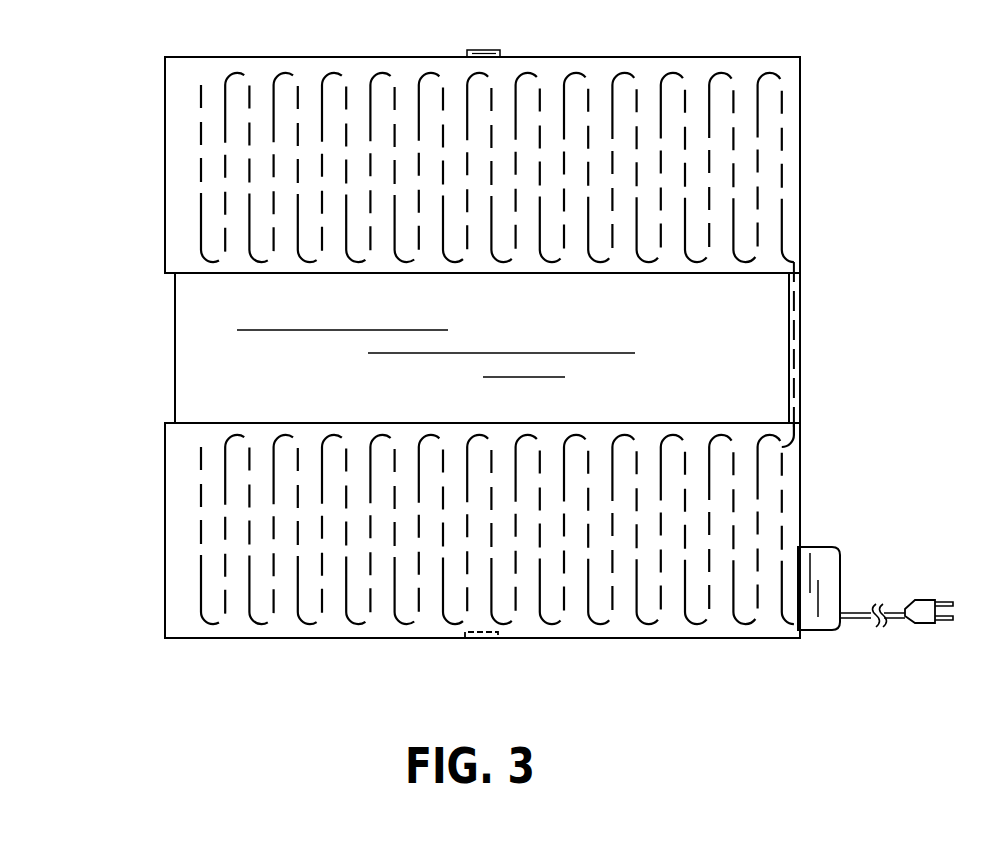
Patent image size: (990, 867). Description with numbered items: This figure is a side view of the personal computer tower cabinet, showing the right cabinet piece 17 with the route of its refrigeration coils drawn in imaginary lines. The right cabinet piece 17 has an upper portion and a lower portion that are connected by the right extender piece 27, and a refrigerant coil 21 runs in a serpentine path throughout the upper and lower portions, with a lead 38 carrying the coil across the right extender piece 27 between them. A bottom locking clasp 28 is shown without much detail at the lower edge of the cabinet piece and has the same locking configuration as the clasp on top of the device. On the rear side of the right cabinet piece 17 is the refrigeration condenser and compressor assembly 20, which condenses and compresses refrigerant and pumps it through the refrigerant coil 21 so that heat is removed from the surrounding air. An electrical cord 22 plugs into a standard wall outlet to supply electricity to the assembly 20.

The right cabinet piece 17 is at (567, 630).
The refrigeration condenser and compressor assembly 20 is at (817, 631).
The refrigerant coil 21 is at (783, 488).
The electrical cord 22 is at (927, 623).
The right extender piece 27 is at (758, 348).
The bottom locking clasp 28 is at (481, 639).
The heating element lead 38 is at (800, 295).